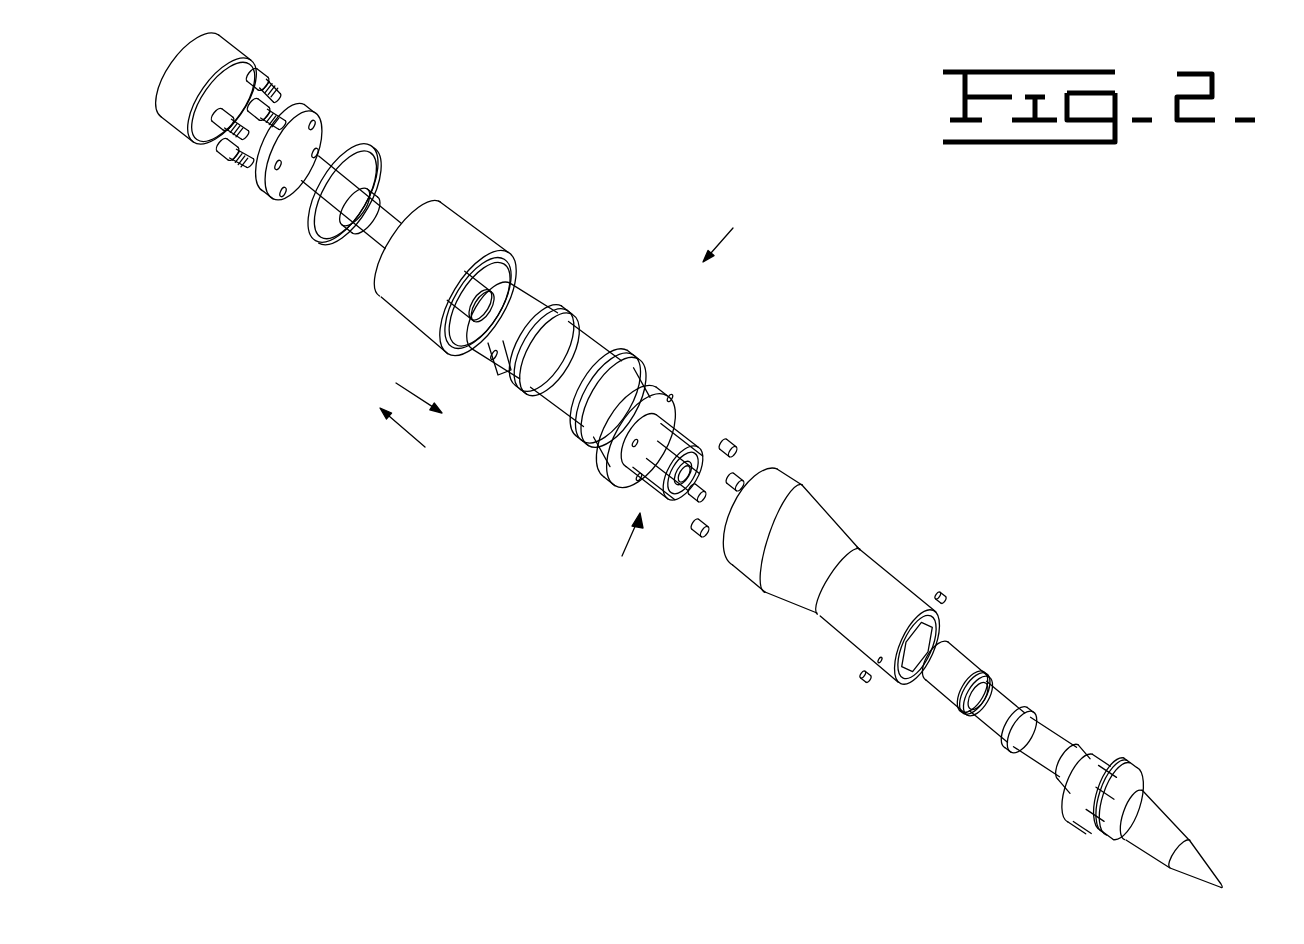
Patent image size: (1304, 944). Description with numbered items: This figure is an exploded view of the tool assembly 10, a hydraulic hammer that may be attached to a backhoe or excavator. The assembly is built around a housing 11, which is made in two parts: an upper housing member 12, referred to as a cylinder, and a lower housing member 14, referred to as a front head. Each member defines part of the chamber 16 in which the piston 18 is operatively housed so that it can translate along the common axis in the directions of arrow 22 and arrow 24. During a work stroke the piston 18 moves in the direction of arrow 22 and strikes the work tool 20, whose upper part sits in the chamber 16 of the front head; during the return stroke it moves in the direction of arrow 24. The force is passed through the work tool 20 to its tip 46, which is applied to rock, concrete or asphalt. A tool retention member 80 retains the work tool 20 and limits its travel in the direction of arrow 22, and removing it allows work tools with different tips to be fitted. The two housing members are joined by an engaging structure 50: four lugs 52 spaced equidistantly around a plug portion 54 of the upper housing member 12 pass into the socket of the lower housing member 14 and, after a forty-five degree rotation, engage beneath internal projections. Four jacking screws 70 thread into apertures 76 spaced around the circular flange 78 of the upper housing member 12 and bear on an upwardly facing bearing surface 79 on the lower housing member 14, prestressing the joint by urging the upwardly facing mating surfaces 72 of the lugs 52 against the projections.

The tool assembly 10 is at (728, 230).
The housing 11 is at (680, 385).
The upper housing member 12 is at (598, 326).
The lower housing member 14 is at (848, 530).
The chamber 16 is at (692, 455).
The piston 18 is at (398, 205).
The work tool 20 is at (1060, 732).
The arrow 22 is at (396, 383).
The arrow 24 is at (398, 430).
The tip 46 is at (1209, 855).
The engaging structure 50 is at (624, 550).
The lugs 52 is at (698, 424).
The plug portion 54 is at (672, 500).
The jacking screws 70 is at (741, 443).
The mating surfaces 72 is at (640, 476).
The threaded apertures 76 is at (674, 399).
The circular flange 78 is at (610, 466).
The bearing surface 79 is at (714, 537).
The tool retention member 80 is at (1177, 772).